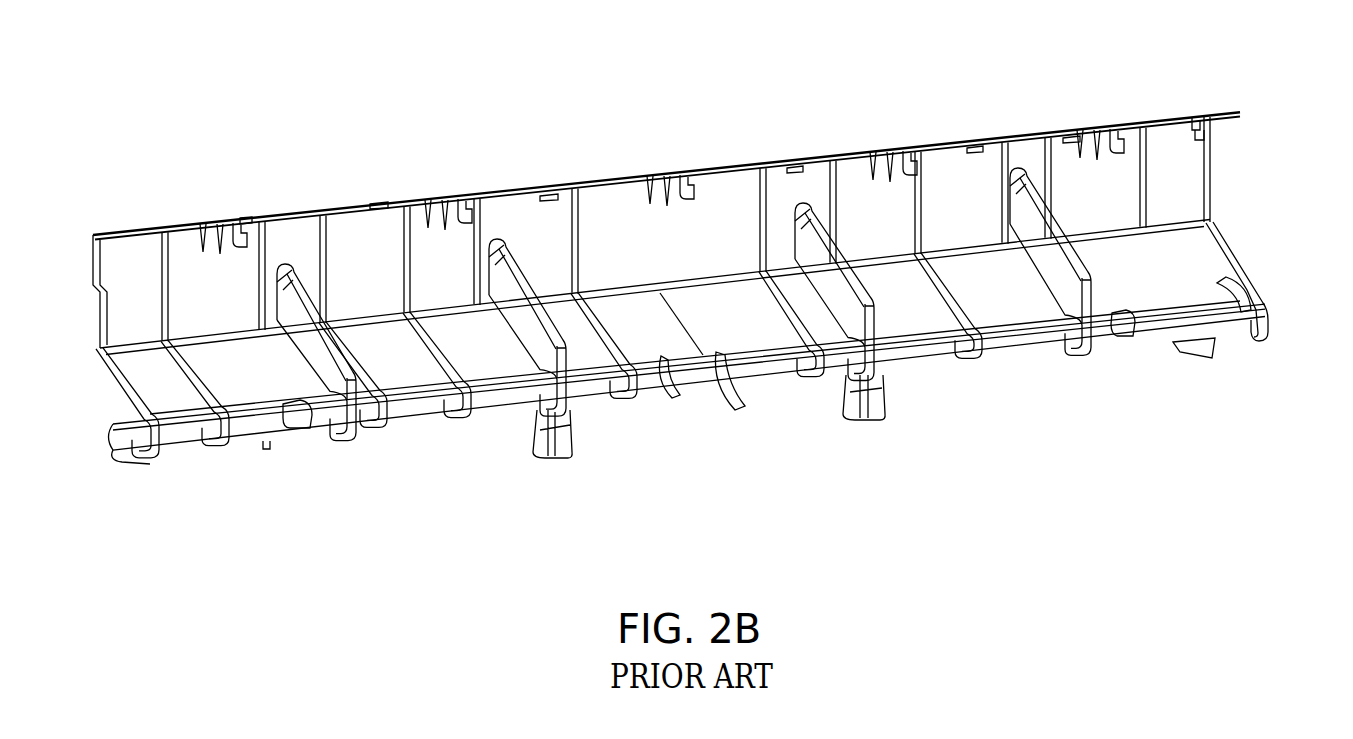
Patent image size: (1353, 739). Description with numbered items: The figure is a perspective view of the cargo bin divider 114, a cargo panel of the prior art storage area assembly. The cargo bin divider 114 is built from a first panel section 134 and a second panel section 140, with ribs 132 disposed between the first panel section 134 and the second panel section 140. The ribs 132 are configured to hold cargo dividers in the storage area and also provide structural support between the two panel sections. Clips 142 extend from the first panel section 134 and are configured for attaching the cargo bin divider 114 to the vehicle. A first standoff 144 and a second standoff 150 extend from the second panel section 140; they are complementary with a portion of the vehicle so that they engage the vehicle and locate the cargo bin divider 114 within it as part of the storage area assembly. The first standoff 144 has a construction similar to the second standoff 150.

The cargo bin divider 114 is at (668, 236).
The ribs 132 is at (300, 333).
The first panel section 134 is at (733, 190).
The second panel section 140 is at (1157, 283).
The clips 142 is at (218, 228).
The first standoff 144 is at (555, 460).
The second standoff 150 is at (867, 423).